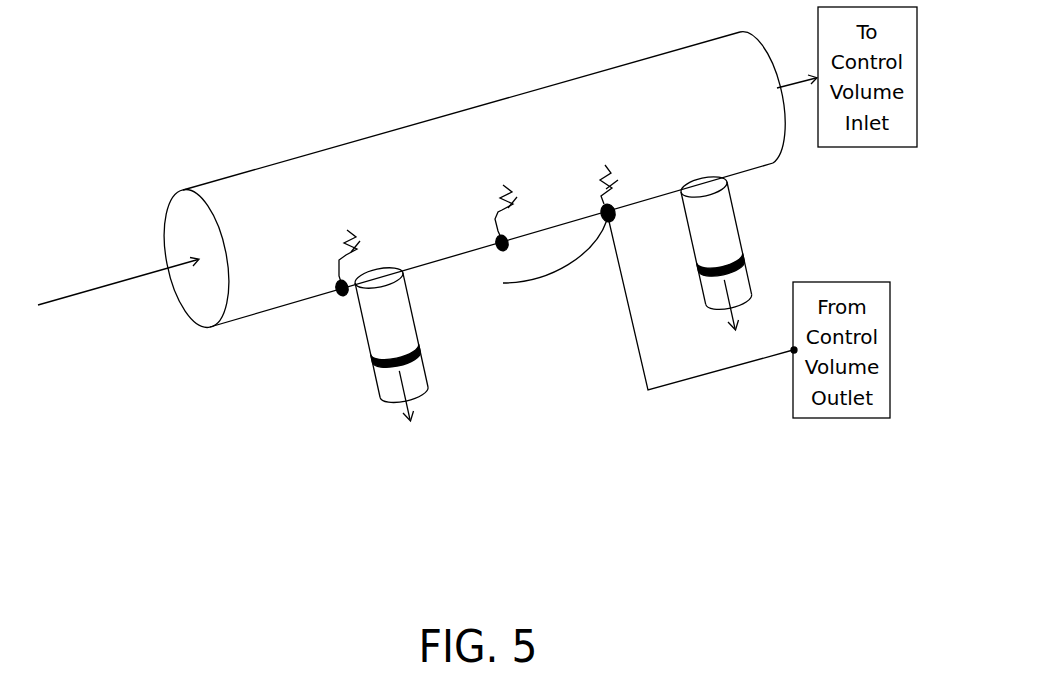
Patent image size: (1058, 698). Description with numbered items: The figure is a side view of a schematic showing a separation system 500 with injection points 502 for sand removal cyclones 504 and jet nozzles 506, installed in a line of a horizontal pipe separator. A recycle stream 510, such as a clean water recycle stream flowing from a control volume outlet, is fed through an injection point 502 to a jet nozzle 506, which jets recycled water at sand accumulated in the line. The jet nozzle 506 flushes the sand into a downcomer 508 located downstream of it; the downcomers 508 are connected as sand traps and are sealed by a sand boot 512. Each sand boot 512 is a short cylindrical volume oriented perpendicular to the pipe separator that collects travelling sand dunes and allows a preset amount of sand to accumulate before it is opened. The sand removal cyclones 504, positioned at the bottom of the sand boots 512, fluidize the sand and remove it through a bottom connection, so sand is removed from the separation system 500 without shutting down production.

The separation system 500 is at (500, 617).
The injection point 502 is at (345, 296).
The sand removal cyclone 504 is at (347, 230).
The jet nozzle 506 is at (605, 165).
The downcomer 508 is at (378, 392).
The recycle stream 510 is at (637, 338).
The sand boot 512 is at (418, 346).